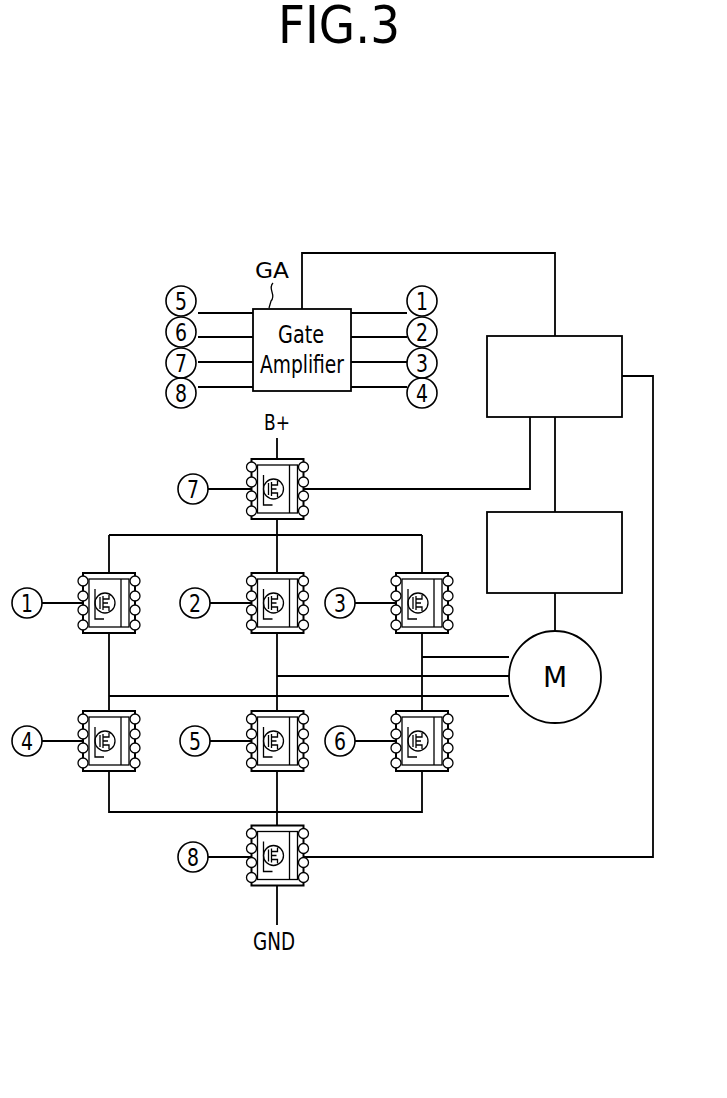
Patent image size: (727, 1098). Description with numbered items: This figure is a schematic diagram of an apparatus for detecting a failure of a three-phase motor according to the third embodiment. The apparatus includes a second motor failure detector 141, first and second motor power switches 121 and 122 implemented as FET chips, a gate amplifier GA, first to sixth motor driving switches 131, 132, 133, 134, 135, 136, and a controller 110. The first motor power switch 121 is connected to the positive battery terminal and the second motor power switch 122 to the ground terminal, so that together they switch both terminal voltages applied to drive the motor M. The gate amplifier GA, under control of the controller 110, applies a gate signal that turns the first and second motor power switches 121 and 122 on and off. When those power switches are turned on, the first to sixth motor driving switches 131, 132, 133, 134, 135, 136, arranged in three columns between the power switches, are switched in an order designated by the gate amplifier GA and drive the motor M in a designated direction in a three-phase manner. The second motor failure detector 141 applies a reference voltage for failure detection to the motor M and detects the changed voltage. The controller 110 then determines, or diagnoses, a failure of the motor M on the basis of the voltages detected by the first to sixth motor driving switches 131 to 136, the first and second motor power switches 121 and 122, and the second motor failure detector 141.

The controller 110 is at (584, 335).
The first motor power switch 121 is at (296, 458).
The second motor power switch 122 is at (284, 888).
The first motor driving switch 131 is at (88, 572).
The second motor driving switch 132 is at (88, 710).
The third motor driving switch 133 is at (292, 572).
The fourth motor driving switch 134 is at (284, 772).
The fifth motor driving switch 135 is at (433, 572).
The sixth motor driving switch 136 is at (430, 772).
The second motor failure detector 141 is at (584, 510).